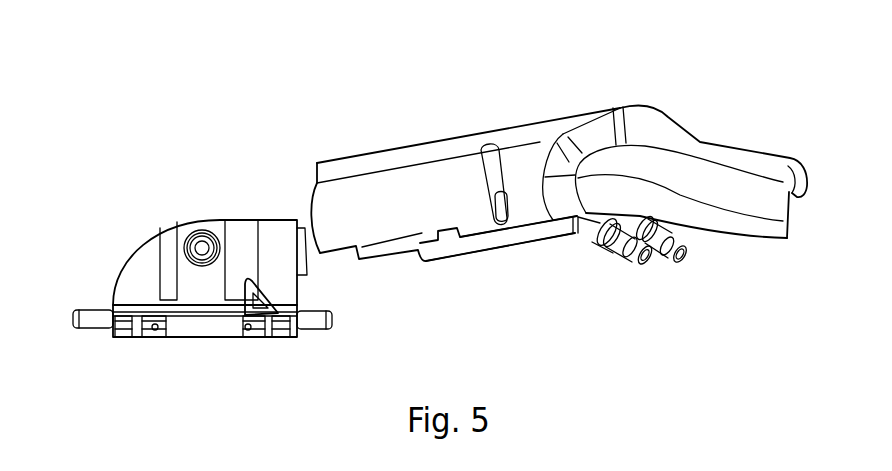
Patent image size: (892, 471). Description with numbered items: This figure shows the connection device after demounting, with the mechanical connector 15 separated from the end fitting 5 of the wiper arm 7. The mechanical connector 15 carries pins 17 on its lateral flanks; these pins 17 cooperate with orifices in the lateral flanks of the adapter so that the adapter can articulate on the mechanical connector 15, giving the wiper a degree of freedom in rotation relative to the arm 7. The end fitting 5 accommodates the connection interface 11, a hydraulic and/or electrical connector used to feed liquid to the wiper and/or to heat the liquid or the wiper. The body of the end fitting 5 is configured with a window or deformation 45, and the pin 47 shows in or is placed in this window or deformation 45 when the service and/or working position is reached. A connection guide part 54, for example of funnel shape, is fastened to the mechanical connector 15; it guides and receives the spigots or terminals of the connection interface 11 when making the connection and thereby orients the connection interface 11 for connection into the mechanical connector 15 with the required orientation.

The end fitting 5 is at (433, 141).
The wiper arm 7 is at (745, 153).
The connection interface 11 is at (527, 247).
The mechanical connector 15 is at (138, 272).
The pin 17 is at (203, 240).
The window or deformation 45 is at (505, 173).
The pin 47 is at (497, 213).
The connection guide part 54 is at (305, 273).